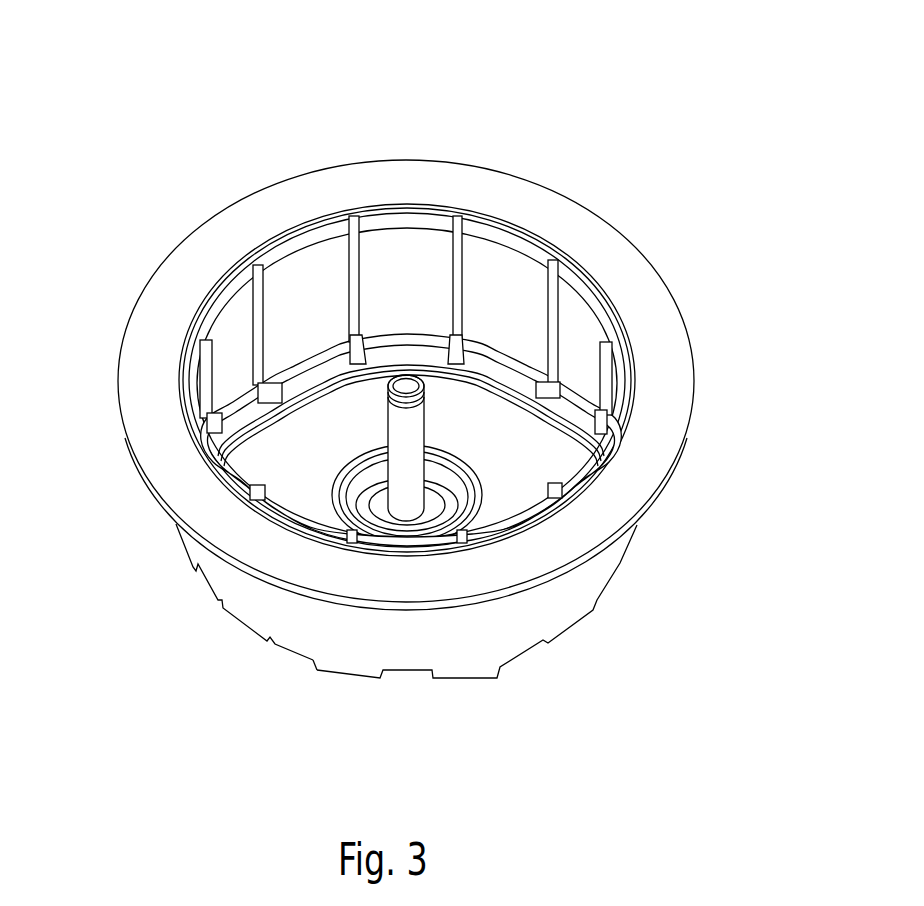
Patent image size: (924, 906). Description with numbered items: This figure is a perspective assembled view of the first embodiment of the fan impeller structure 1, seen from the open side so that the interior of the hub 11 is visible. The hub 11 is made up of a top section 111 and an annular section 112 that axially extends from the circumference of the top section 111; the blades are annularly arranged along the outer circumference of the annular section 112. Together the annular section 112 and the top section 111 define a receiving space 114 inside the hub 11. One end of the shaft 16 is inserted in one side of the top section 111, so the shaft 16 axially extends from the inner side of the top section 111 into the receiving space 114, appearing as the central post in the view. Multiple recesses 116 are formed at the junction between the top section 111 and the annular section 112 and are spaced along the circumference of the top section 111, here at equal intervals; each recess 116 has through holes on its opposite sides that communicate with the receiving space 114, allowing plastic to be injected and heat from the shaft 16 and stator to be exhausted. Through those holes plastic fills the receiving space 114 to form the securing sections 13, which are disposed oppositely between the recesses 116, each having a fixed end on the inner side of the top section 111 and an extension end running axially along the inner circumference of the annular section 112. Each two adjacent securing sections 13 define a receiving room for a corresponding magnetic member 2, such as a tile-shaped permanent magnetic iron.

The fan impeller structure 1 is at (759, 140).
The magnetic member 2 is at (217, 307).
The hub 11 is at (462, 568).
The top section 111 is at (568, 630).
The annular section 112 is at (602, 566).
The receiving space 114 is at (562, 316).
The recess 116 is at (282, 658).
The securing section 13 is at (350, 297).
The shaft 16 is at (410, 386).